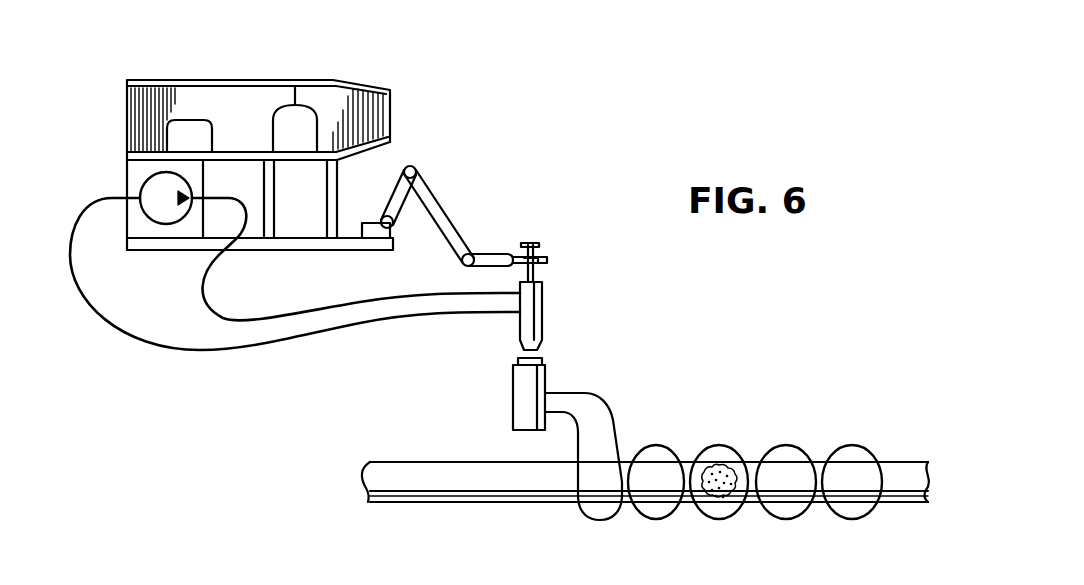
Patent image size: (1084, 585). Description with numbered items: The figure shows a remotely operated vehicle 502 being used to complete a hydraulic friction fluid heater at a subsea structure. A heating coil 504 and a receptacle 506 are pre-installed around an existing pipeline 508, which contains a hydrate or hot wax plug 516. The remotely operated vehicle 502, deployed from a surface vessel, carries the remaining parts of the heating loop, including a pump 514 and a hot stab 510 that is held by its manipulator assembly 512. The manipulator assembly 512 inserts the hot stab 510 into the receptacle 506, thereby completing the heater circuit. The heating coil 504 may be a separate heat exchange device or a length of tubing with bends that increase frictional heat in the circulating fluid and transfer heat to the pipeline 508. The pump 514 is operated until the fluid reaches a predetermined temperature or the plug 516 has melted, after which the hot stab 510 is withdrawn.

The remotely operated vehicle 502 is at (235, 90).
The pump 514 is at (145, 191).
The manipulator assembly 512 is at (437, 212).
The hot stab 510 is at (538, 303).
The receptacle 506 is at (546, 382).
The existing pipeline 508 is at (420, 496).
The heating coil 504 is at (850, 447).
The hydrate or hot wax plug 516 is at (720, 465).